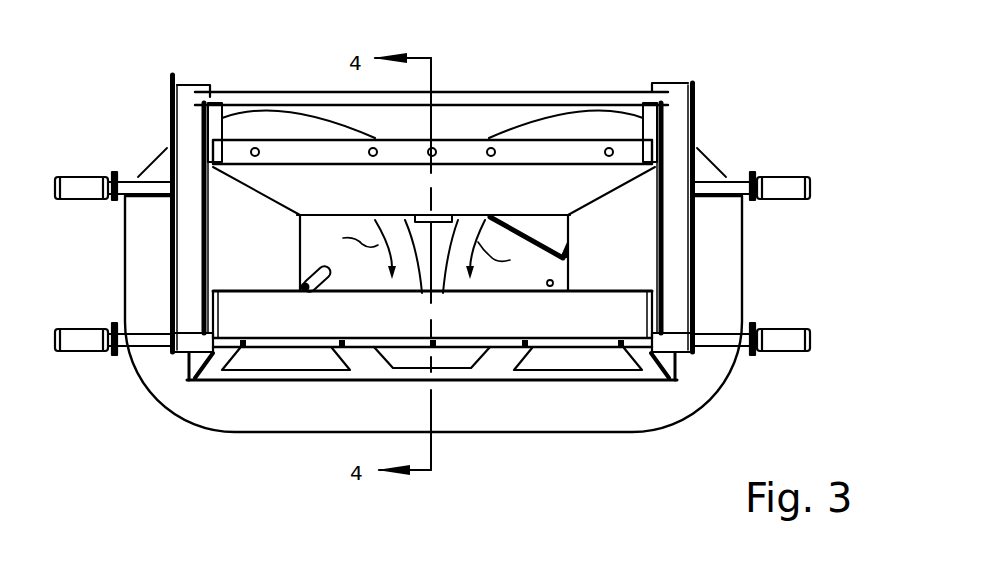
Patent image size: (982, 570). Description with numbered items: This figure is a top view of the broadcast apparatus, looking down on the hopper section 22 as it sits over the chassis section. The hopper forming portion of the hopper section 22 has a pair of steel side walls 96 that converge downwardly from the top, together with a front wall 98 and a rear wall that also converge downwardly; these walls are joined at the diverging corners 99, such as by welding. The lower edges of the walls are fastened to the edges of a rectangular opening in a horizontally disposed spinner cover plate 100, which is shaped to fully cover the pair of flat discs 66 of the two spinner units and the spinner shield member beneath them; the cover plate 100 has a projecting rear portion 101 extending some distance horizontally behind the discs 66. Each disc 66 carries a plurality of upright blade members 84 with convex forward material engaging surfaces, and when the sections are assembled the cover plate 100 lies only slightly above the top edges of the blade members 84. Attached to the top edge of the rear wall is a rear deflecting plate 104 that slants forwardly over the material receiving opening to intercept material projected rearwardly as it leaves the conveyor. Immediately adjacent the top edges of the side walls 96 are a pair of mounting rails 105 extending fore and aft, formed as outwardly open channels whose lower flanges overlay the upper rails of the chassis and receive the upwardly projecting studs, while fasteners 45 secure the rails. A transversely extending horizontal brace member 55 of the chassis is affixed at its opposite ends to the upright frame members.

The hopper section 22 is at (716, 117).
The fasteners 45 is at (128, 185).
The horizontal brace member 55 is at (462, 90).
The flat discs 66 is at (358, 272).
The upright blade members 84 is at (538, 250).
The side walls 96 is at (245, 258).
The front wall 98 is at (508, 196).
The diverging corners 99 is at (250, 218).
The spinner cover plate 100 is at (160, 420).
The projecting rear portion 101 is at (258, 413).
The rear deflecting plate 104 is at (585, 318).
The mounting rails 105 is at (188, 125).